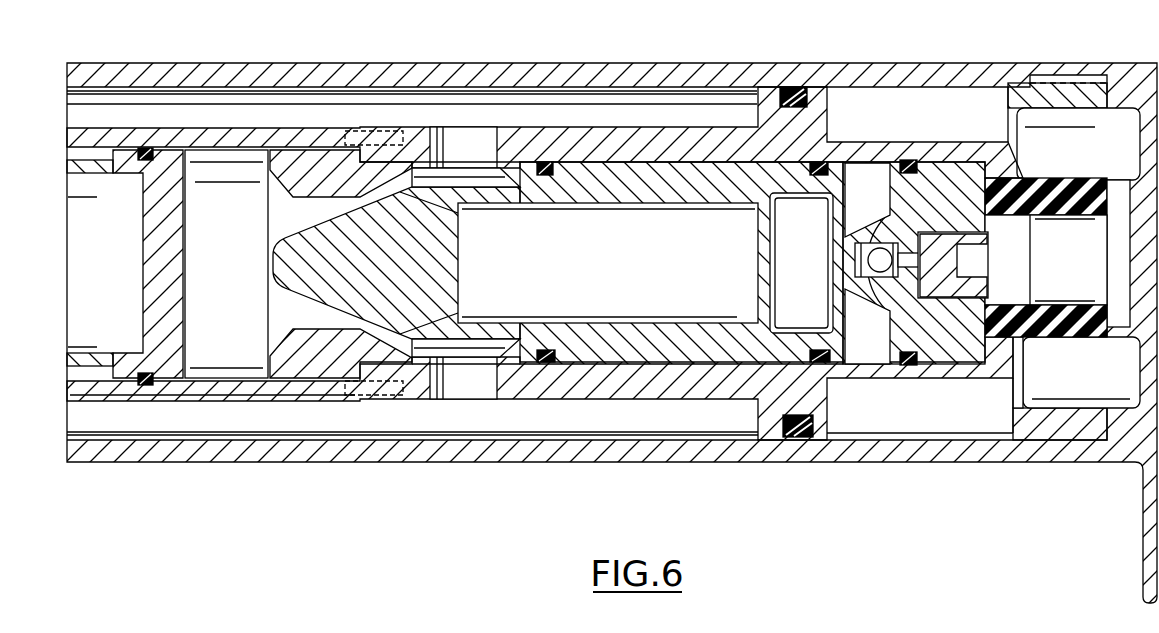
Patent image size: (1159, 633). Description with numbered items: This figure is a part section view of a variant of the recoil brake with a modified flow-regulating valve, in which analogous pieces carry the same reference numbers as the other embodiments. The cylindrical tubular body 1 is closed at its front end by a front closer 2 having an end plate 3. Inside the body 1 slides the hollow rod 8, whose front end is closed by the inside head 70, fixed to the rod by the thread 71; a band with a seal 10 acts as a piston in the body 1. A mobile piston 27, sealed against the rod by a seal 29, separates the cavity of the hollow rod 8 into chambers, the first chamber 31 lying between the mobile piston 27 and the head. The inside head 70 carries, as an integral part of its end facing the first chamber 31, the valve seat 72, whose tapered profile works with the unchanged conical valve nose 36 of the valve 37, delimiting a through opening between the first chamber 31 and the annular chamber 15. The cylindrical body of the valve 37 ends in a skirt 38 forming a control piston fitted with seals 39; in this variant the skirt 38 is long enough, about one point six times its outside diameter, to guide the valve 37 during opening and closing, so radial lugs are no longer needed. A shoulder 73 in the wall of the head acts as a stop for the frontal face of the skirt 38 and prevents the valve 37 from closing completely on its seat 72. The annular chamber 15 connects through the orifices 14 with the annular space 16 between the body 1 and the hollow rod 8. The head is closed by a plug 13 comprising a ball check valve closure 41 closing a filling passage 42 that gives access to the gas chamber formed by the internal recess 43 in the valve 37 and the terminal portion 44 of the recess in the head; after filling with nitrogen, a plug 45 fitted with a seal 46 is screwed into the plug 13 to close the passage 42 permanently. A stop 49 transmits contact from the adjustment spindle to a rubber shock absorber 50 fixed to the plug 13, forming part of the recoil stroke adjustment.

The cylindrical tubular body 1 is at (888, 447).
The front closer 2 is at (1070, 420).
The end plate 3 is at (1143, 322).
The hollow rod 8 is at (194, 400).
The seal 10 is at (797, 440).
The plug 13 is at (962, 327).
The orifices 14 is at (463, 263).
The annular chamber 15 is at (481, 346).
The annular space 16 is at (558, 413).
The mobile piston 27 is at (160, 262).
The seal 29 is at (143, 158).
The first chamber 31 is at (226, 264).
The valve nose 36 is at (396, 263).
The valve 37 is at (423, 183).
The skirt 38 is at (697, 183).
The seals 39 is at (548, 163).
The ball check valve closure 41 is at (856, 252).
The filling passage 42 is at (887, 303).
The internal recess 43 is at (645, 263).
The terminal portion 44 is at (867, 200).
The plug 45 is at (947, 254).
The seal 46 is at (987, 213).
The stop 49 is at (1118, 205).
The shock absorber 50 is at (1053, 197).
The inside head 70 is at (614, 140).
The thread 71 is at (366, 138).
The valve seat 72 is at (305, 355).
The shoulder 73 is at (512, 165).